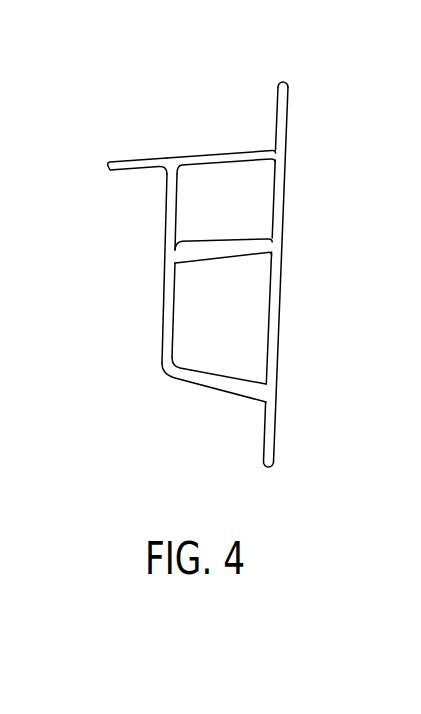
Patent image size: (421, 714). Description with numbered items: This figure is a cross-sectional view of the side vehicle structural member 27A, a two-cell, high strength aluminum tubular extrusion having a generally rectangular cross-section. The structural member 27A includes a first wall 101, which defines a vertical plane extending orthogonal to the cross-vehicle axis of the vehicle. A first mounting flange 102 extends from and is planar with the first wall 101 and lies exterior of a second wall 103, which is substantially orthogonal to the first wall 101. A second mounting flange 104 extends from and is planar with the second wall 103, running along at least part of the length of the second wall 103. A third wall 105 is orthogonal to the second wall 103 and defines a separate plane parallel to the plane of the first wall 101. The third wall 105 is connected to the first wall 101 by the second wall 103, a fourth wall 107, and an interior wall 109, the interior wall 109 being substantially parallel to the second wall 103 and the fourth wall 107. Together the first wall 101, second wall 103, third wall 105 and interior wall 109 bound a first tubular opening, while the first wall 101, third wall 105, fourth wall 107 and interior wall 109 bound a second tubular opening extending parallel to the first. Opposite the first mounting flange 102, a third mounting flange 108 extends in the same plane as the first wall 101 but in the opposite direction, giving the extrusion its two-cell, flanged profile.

The side vehicle structural member 27A is at (167, 103).
The first wall 101 is at (279, 313).
The first mounting flange 102 is at (287, 114).
The second wall 103 is at (212, 157).
The second mounting flange 104 is at (135, 164).
The third wall 105 is at (163, 317).
The fourth wall 107 is at (208, 385).
The third mounting flange 108 is at (275, 423).
The interior wall 109 is at (228, 243).